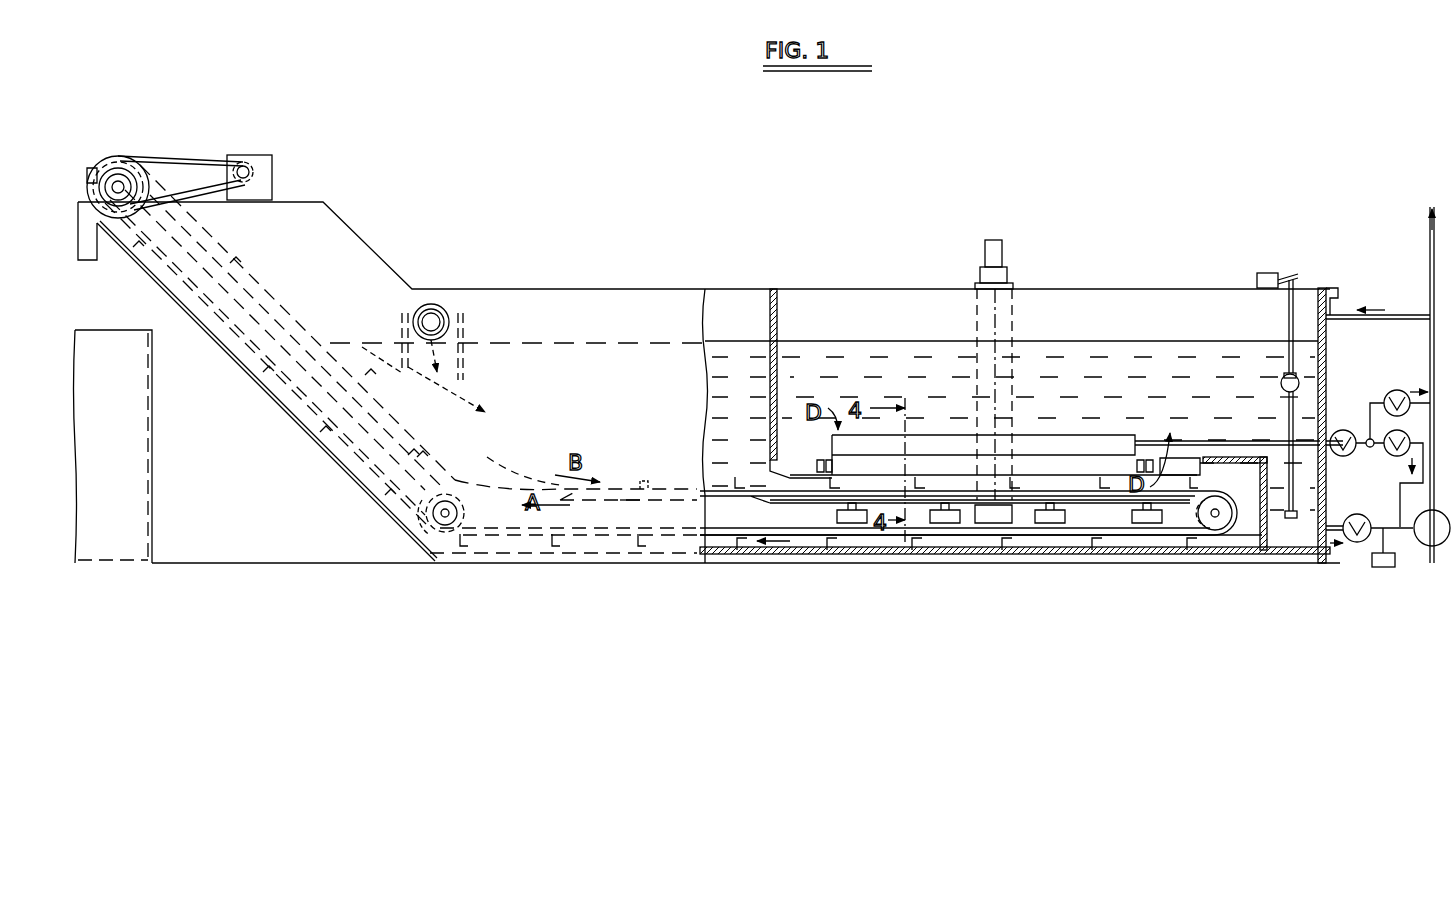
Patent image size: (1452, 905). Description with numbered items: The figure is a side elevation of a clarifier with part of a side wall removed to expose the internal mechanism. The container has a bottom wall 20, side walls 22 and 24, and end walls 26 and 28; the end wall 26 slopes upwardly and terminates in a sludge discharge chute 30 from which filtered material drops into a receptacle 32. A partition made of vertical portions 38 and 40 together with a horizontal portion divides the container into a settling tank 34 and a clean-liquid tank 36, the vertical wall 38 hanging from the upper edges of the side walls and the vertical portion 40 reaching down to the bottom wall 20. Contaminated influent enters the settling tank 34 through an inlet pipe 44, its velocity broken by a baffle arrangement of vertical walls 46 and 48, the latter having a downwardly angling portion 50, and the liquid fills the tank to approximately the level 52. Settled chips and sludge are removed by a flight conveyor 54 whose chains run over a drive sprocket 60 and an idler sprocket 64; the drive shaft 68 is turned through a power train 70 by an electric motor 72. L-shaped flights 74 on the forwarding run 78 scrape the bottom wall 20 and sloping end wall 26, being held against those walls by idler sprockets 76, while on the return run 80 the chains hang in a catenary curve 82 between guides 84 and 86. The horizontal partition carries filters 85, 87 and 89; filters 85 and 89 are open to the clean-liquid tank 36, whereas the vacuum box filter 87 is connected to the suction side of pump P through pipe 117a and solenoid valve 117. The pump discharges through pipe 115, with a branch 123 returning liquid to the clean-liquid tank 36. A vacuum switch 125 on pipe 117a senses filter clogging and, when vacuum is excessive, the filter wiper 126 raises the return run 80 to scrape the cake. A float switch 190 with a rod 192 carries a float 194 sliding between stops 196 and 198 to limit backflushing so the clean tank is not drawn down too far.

The bottom wall 20 is at (712, 563).
The side wall 22 is at (738, 302).
The side wall 24 is at (618, 292).
The end wall 26 is at (299, 429).
The end wall 28 is at (1327, 368).
The sludge discharge chute 30 is at (88, 263).
The receptacle 32 is at (131, 472).
The settling tank 34 is at (739, 421).
The clean-liquid tank 36 is at (1048, 433).
The vertical partition portion 38 is at (779, 315).
The vertical partition portion 40 is at (1253, 540).
The inlet pipe 44 is at (437, 306).
The baffle wall 46 is at (468, 320).
The baffle wall 48 is at (400, 318).
The downwardly angling portion 50 is at (412, 363).
The liquid level 52 is at (612, 344).
The flight conveyor 54 is at (857, 537).
The drive sprocket 60 is at (121, 183).
The idler sprocket 64 is at (1213, 523).
The drive shaft 68 is at (130, 190).
The power train 70 is at (205, 160).
The electric motor 72 is at (258, 175).
The flights 74 is at (530, 450).
The idler sprockets 76 is at (466, 500).
The forwarding run 78 is at (352, 488).
The return run 80 is at (647, 487).
The catenary curve 82 is at (487, 457).
The guide 84 is at (417, 457).
The filter 85 is at (795, 470).
The guide 86 is at (628, 503).
The vacuum box filter 87 is at (1072, 448).
The filter 89 is at (1178, 470).
The discharge pipe 115 is at (1430, 232).
The solenoid valve 117 is at (1357, 543).
The suction pipe 117a is at (1343, 513).
The branch pipe 123 is at (1400, 315).
The vacuum switch 125 is at (1390, 567).
The filter wiper 126 is at (1082, 503).
The float switch 190 is at (1275, 272).
The rod 192 is at (1295, 297).
The float 194 is at (1281, 385).
The stop 196 is at (1288, 372).
The stop 198 is at (1287, 523).